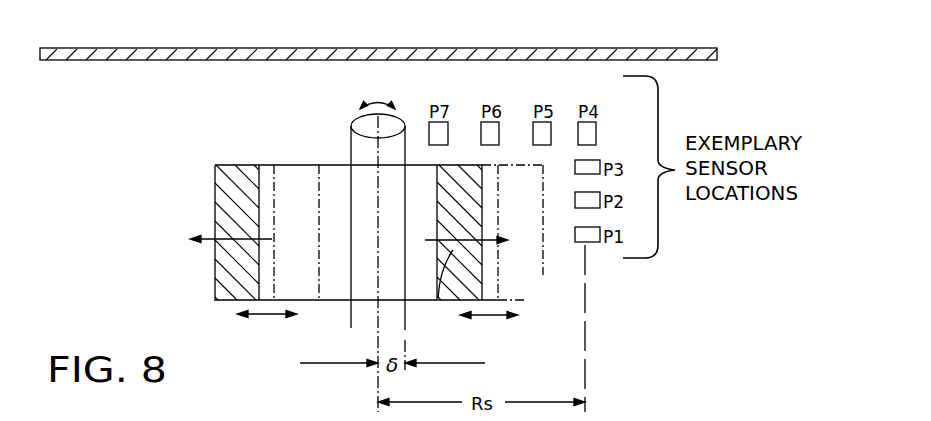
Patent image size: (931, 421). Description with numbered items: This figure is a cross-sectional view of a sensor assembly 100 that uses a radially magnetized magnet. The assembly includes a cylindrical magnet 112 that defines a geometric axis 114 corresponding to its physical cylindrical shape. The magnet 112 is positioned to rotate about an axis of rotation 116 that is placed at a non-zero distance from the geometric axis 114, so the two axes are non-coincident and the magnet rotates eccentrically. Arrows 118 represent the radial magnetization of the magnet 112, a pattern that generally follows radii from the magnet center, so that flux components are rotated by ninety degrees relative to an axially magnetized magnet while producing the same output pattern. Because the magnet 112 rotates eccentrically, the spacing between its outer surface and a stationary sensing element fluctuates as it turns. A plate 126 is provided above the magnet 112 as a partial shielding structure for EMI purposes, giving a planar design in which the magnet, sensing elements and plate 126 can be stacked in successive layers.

The sensor assembly 100 is at (119, 112).
The cylindrical magnet 112 is at (229, 168).
The geometric axis 114 is at (351, 143).
The axis of rotation 116 is at (358, 108).
The arrows 118 is at (228, 221).
The plate 126 is at (657, 47).